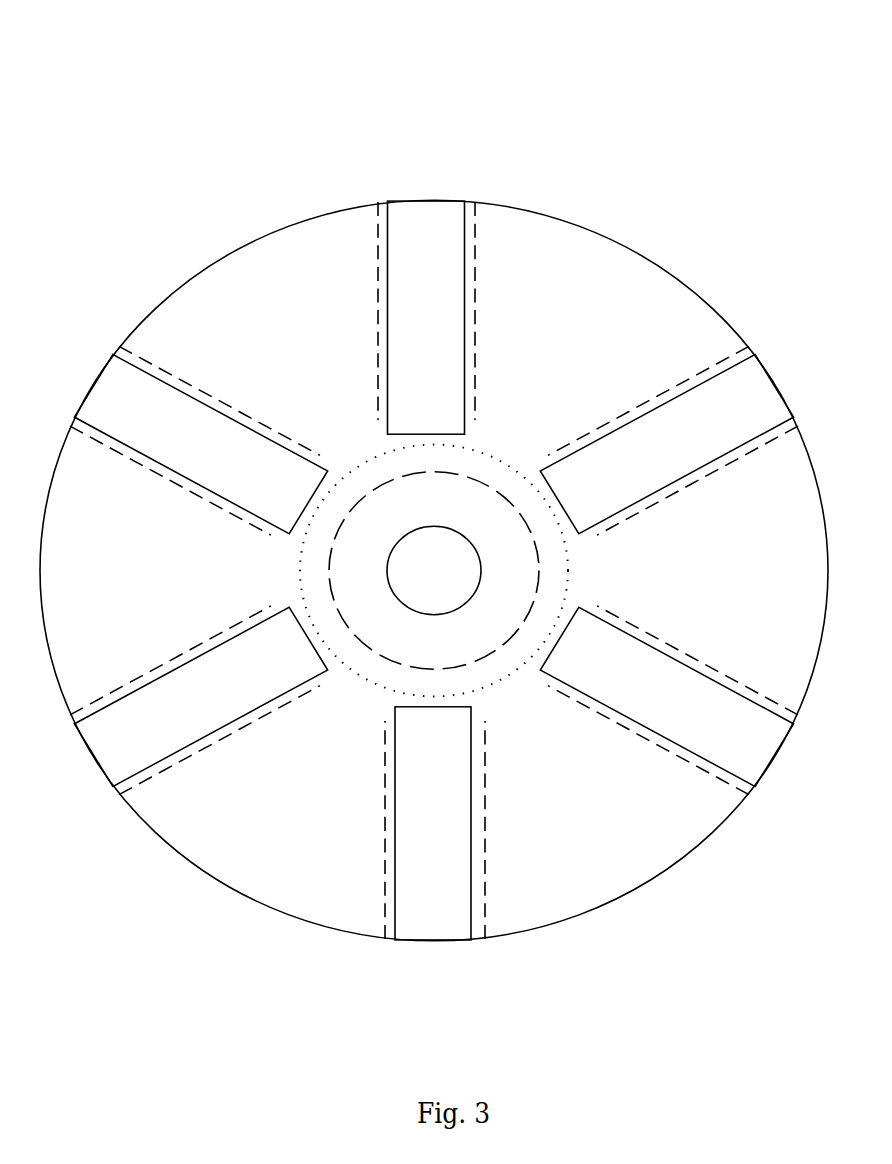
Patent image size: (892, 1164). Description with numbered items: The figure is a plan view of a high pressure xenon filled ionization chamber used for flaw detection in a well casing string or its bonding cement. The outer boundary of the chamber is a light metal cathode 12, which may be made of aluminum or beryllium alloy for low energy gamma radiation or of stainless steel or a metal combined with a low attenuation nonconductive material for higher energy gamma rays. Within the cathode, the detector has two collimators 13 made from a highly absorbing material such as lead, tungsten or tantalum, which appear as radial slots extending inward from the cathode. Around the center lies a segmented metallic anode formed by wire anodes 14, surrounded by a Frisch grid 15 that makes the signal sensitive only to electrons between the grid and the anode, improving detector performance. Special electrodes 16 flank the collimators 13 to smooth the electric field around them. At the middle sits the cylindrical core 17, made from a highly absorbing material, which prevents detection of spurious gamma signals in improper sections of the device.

The light metal cathode 12 is at (169, 281).
The collimator 13 is at (408, 188).
The wire anode 14 is at (474, 461).
The Frisch grid 15 is at (564, 580).
The special electrode 16 is at (682, 366).
The core 17 is at (432, 625).